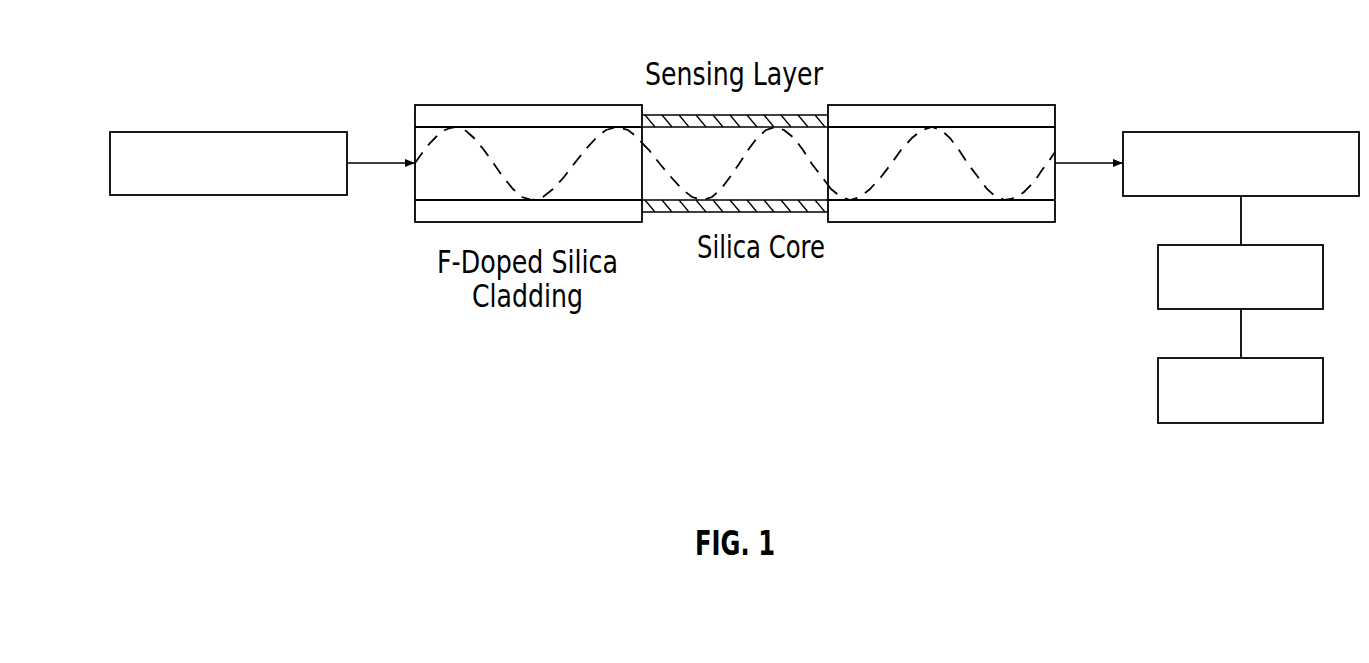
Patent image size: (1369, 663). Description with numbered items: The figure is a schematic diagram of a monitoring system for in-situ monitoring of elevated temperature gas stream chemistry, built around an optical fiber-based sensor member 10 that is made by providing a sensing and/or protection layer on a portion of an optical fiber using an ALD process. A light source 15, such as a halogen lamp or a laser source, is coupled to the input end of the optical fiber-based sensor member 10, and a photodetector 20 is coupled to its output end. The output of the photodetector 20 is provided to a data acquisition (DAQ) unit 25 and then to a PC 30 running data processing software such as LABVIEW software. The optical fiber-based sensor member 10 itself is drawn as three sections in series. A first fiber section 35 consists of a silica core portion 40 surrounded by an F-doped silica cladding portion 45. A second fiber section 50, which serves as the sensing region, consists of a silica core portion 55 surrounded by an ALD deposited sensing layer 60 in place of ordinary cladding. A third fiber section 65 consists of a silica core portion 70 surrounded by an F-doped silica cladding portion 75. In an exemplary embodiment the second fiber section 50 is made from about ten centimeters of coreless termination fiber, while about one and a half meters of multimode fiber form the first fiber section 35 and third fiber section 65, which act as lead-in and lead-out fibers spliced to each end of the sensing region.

The optical fiber-based sensor member 10 is at (790, 52).
The light source 15 is at (228, 132).
The photodetector 20 is at (1303, 132).
The data acquisition (DAQ) unit 25 is at (1267, 245).
The PC 30 is at (1267, 358).
The first fiber section 35 is at (549, 104).
The silica core portion 40 is at (520, 145).
The F-doped silica cladding portion 45 is at (438, 116).
The second fiber section 50 is at (678, 216).
The silica core portion 55 is at (808, 188).
The ALD deposited sensing layer 60 is at (797, 118).
The third fiber section 65 is at (967, 103).
The silica core portion 70 is at (925, 182).
The F-doped silica cladding portion 75 is at (1035, 117).